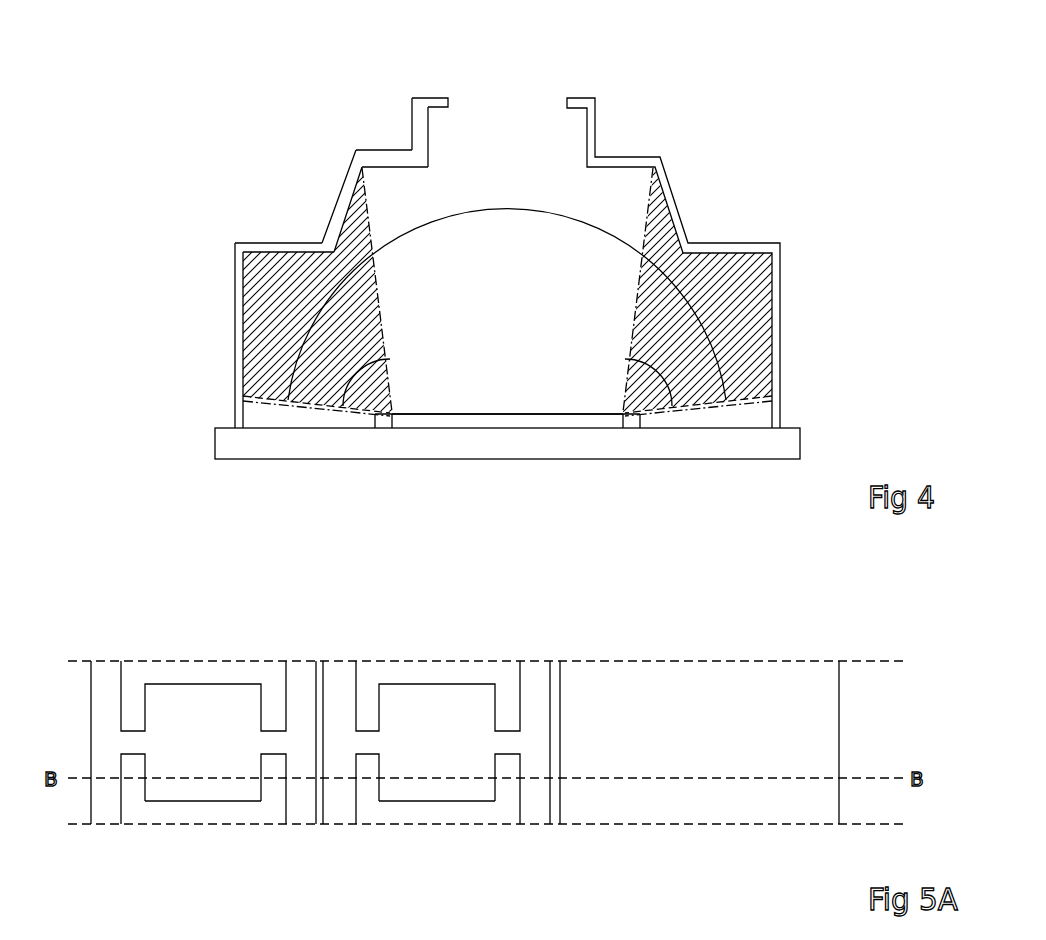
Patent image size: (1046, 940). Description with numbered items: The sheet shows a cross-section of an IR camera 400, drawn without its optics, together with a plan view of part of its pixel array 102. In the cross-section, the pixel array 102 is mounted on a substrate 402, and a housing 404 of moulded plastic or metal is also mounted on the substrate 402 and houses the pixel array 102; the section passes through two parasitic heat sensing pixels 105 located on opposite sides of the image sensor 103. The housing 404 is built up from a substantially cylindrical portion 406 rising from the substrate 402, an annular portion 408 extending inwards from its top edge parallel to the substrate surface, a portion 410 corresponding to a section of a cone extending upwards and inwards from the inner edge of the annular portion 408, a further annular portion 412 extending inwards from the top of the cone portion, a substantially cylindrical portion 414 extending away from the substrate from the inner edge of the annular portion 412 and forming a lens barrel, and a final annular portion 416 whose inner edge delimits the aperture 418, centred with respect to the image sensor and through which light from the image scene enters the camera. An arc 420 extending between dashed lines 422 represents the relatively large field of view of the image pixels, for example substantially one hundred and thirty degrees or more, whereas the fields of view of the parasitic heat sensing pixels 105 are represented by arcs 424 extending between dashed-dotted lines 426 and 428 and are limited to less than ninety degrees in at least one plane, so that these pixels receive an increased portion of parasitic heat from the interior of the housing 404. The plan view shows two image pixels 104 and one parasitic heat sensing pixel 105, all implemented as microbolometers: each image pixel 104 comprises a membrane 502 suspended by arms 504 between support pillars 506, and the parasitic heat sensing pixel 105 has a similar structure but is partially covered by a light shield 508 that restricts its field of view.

In FIG. 4, the IR camera 400 is at (703, 102).
In FIG. 4, the substrate 402 is at (751, 442).
In FIG. 4, the housing 404 is at (728, 243).
In FIG. 4, the cylindrical portion 406 is at (233, 243).
In FIG. 4, the annular portion 408 is at (322, 243).
In FIG. 4, the cone section portion 410 is at (341, 188).
In FIG. 4, the annular portion 412 is at (387, 148).
In FIG. 4, the cylindrical portion 414 is at (412, 127).
In FIG. 4, the annular portion 416 is at (437, 98).
In FIG. 4, the aperture 418 is at (567, 95).
In FIG. 4, the arc 420 is at (483, 212).
In FIG. 4, the dashed lines 422 is at (273, 398).
In FIG. 4, the arcs 424 is at (382, 352).
In FIG. 4, the dashed-dotted lines 426 is at (296, 412).
In FIG. 4, the dashed-dotted lines 428 is at (378, 300).
In FIG. 4, the pixel array 102 is at (458, 408).
In FIG. 4, the image sensor 103 is at (527, 421).
In FIG. 5A, the image pixel 104 is at (222, 661).
In FIG. 4, the parasitic heat sensing pixel 105 is at (384, 420).
In FIG. 5A, the parasitic heat sensing pixel 105 is at (817, 660).
In FIG. 5A, the membrane 502 is at (197, 790).
In FIG. 5A, the arms 504 is at (132, 742).
In FIG. 5A, the support pillars 506 is at (107, 670).
In FIG. 5A, the light shield 508 is at (700, 673).